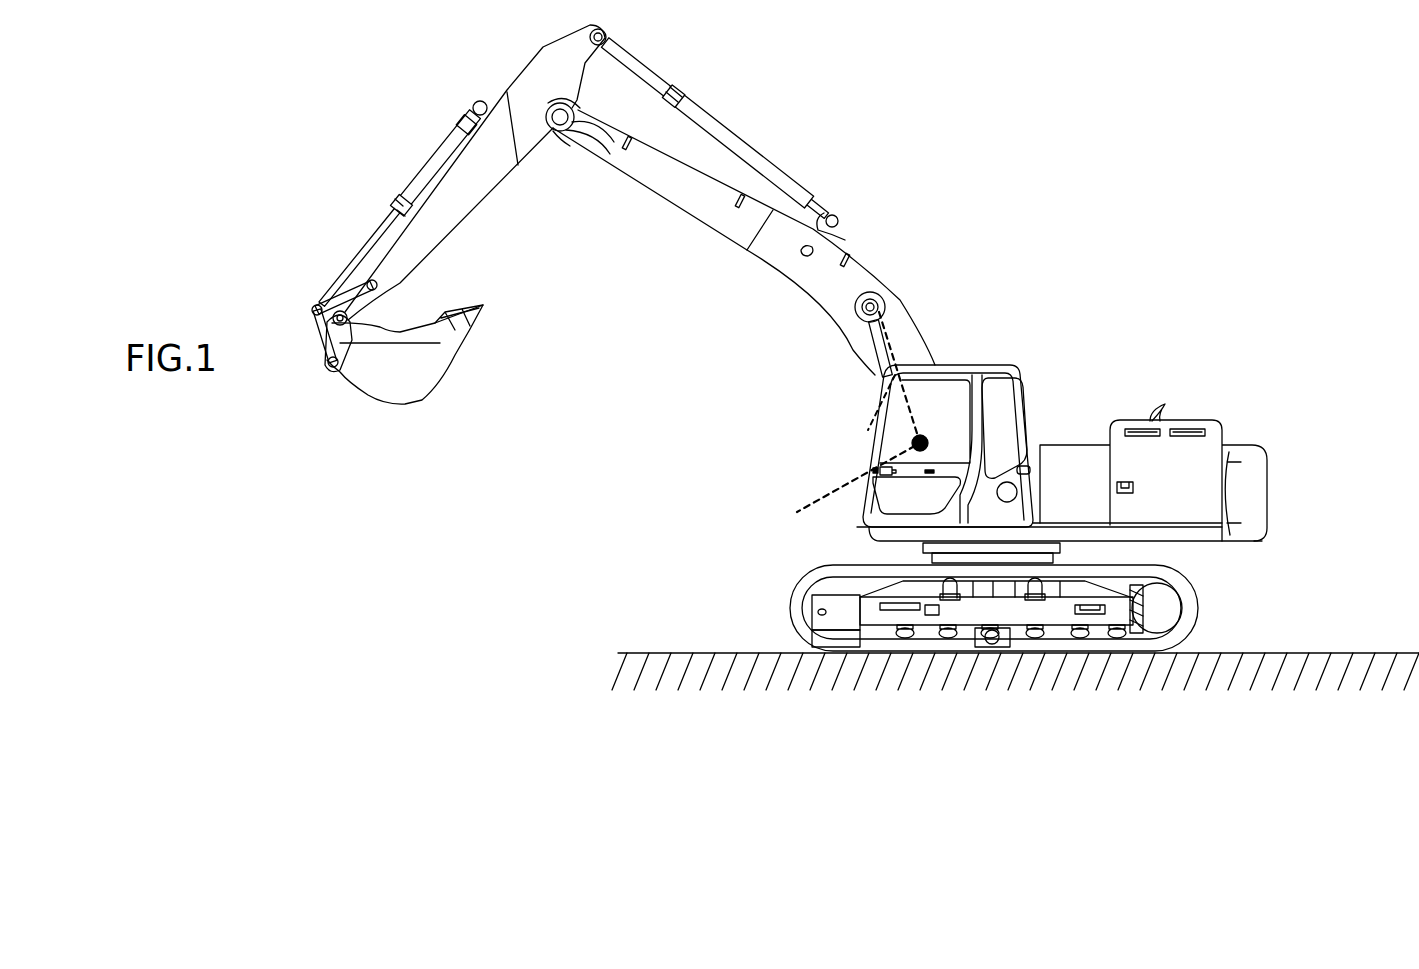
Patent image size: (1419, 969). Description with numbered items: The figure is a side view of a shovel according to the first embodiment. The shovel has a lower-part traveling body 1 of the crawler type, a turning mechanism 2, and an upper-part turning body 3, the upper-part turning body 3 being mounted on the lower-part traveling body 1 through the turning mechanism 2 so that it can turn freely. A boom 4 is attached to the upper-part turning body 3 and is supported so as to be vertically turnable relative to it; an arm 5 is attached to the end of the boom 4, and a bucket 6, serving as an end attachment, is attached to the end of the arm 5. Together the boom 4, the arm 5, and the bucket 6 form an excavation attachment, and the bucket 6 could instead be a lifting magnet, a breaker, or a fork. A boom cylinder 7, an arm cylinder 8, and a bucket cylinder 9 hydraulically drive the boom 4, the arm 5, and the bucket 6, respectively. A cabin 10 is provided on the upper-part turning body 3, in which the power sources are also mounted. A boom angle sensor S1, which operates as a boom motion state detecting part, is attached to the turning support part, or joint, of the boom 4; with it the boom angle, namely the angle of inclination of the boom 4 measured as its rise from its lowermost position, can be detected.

The lower-part traveling body 1 is at (787, 612).
The turning mechanism 2 is at (1060, 550).
The upper-part turning body 3 is at (1072, 445).
The boom 4 is at (782, 263).
The arm 5 is at (485, 185).
The bucket 6 is at (393, 397).
The boom cylinder 7 is at (883, 343).
The arm cylinder 8 is at (773, 167).
The bucket cylinder 9 is at (428, 172).
The cabin 10 is at (1008, 363).
The boom angle sensor S1 is at (926, 436).